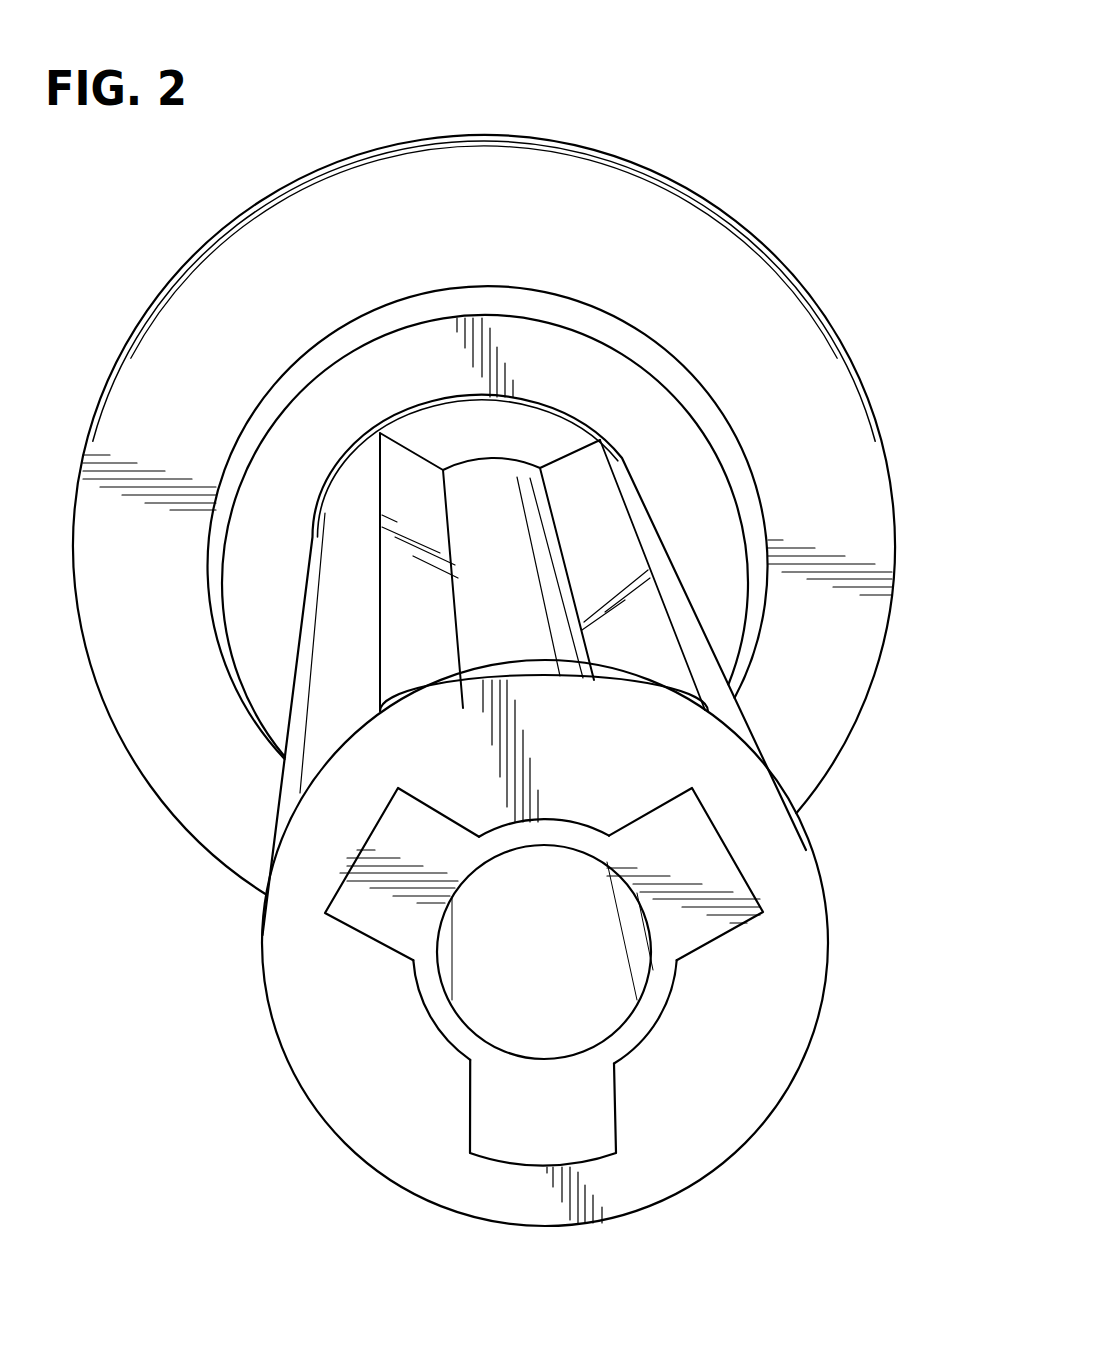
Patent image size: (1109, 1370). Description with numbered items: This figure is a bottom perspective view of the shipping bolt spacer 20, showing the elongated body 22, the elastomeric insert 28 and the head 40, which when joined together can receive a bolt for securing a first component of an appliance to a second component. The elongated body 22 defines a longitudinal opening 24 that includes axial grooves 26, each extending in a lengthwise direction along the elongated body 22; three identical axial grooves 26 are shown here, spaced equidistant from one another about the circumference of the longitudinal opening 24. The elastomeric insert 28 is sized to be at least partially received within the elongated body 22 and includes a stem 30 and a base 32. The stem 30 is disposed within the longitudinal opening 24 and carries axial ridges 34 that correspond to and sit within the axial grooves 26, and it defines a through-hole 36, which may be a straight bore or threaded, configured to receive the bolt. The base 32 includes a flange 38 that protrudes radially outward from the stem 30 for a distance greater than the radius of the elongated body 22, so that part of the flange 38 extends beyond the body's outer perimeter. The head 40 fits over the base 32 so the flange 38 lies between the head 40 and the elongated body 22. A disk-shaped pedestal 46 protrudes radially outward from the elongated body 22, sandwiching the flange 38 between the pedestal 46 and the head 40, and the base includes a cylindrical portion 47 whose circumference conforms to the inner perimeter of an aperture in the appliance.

The shipping bolt spacer 20 is at (799, 100).
The elongated body 22 is at (800, 945).
The longitudinal opening 24 is at (665, 1018).
The axial grooves 26 is at (470, 1083).
The elastomeric insert 28 is at (530, 1150).
The stem 30 is at (710, 853).
The base 32 is at (865, 485).
The axial ridges 34 is at (593, 1102).
The through-hole 36 is at (540, 1037).
The flange 38 is at (790, 323).
The head 40 is at (431, 136).
The disk-shaped pedestal 46 is at (149, 353).
The cylindrical portion 47 is at (337, 398).